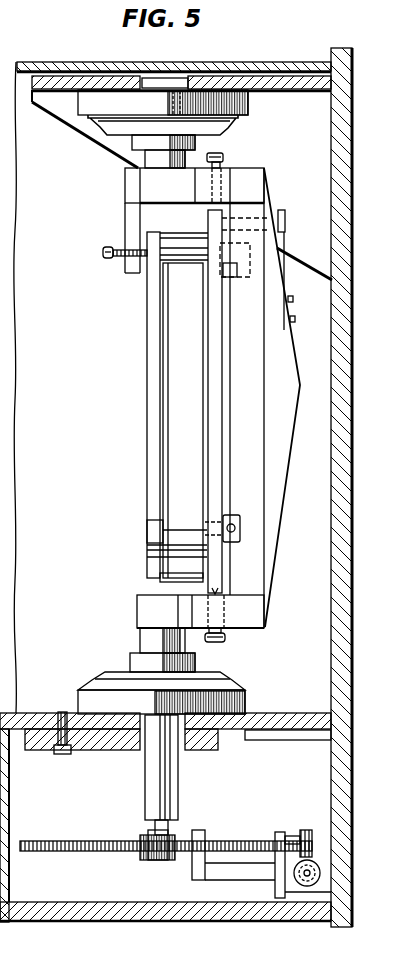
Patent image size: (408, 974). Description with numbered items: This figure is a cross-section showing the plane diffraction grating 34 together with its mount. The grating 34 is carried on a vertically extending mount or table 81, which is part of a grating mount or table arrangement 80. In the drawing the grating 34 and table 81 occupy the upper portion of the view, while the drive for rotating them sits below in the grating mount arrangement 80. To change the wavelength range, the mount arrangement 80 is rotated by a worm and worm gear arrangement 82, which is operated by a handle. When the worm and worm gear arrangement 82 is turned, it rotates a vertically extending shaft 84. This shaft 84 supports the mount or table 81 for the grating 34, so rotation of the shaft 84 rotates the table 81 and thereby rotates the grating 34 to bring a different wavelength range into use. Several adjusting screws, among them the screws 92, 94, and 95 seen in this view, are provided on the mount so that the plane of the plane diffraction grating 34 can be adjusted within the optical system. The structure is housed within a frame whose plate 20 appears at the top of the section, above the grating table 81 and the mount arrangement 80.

The top plate 20 is at (212, 64).
The plane diffraction grating 34 is at (178, 411).
The grating mount or table arrangement 80 is at (227, 752).
The mount or table 81 is at (245, 391).
The worm and worm gear arrangement 82 is at (157, 864).
The vertically extending shaft 84 is at (157, 780).
The adjusting screw 92 is at (223, 155).
The adjusting screw 94 is at (110, 262).
The adjusting screw 95 is at (226, 641).